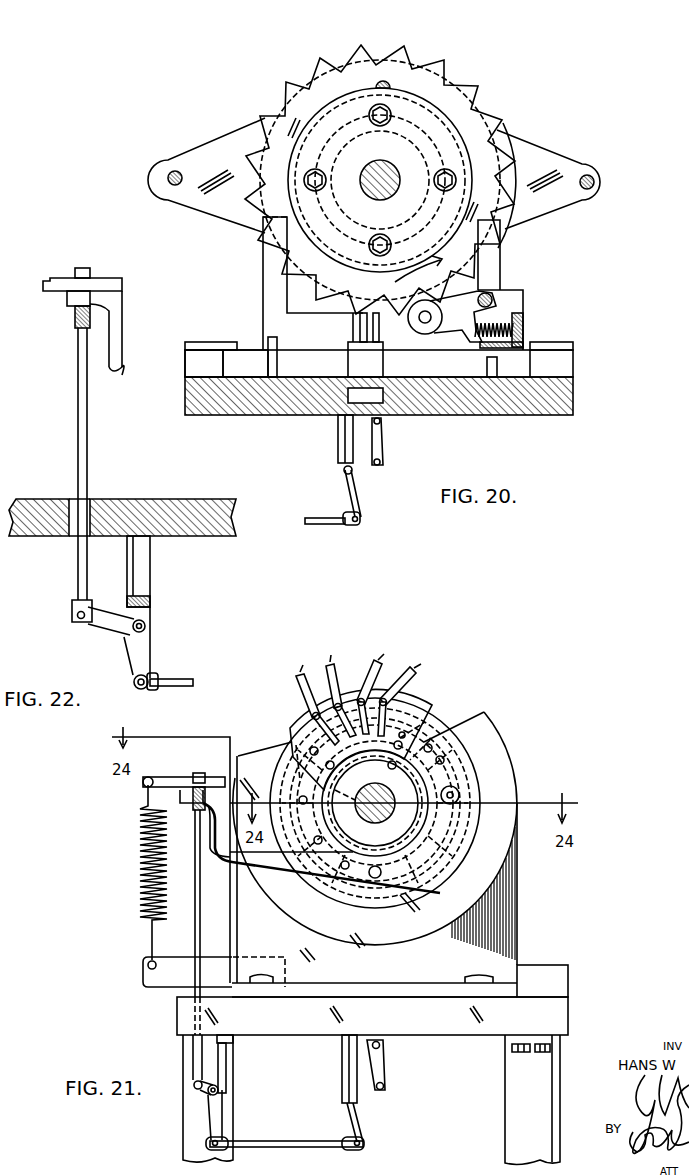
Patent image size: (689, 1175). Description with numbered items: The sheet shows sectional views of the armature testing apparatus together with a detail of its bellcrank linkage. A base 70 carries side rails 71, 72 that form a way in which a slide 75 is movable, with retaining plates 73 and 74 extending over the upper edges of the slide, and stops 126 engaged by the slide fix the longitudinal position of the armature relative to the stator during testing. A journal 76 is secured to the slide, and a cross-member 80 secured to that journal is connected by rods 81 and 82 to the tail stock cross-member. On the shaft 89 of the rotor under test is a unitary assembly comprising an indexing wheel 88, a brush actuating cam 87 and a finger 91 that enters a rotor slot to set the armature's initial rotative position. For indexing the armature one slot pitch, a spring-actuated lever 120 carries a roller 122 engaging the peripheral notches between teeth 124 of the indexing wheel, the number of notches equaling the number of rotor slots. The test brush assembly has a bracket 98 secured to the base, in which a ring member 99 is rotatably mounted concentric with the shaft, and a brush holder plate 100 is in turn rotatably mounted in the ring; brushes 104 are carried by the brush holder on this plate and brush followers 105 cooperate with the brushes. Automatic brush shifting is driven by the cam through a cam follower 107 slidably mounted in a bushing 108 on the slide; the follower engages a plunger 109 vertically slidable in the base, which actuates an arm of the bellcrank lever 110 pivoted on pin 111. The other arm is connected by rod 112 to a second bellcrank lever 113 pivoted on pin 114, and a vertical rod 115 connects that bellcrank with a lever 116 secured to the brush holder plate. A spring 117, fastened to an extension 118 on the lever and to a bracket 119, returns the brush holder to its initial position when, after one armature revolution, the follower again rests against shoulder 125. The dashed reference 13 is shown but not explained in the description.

In FIG. 21, the pin 13 is at (460, 793).
In FIG. 20, the base 70 is at (565, 405).
In FIG. 22, the base 70 is at (202, 499).
In FIG. 21, the base 70 is at (560, 1010).
In FIG. 20, the side rail 71 is at (565, 367).
In FIG. 21, the side rail 71 is at (562, 983).
In FIG. 20, the side rail 72 is at (193, 367).
In FIG. 20, the retaining plate 73 is at (563, 347).
In FIG. 21, the retaining plate 73 is at (552, 963).
In FIG. 20, the retaining plate 74 is at (200, 342).
In FIG. 20, the slide 75 is at (243, 360).
In FIG. 20, the journal 76 is at (273, 257).
In FIG. 20, the cross-member 80 is at (225, 147).
In FIG. 20, the rod 81 is at (596, 180).
In FIG. 20, the rod 82 is at (177, 168).
In FIG. 20, the brush actuating cam 87 is at (490, 262).
In FIG. 20, the indexing wheel 88 is at (427, 67).
In FIG. 20, the shaft 89 is at (397, 180).
In FIG. 21, the shaft 89 is at (393, 793).
In FIG. 20, the finger 91 is at (382, 82).
In FIG. 21, the bracket 98 is at (503, 887).
In FIG. 21, the ring member 99 is at (308, 765).
In FIG. 21, the brush holder plate 100 is at (392, 725).
In FIG. 21, the brushes 104 is at (390, 723).
In FIG. 21, the brush followers 105 is at (331, 665).
In FIG. 20, the cam follower 107 is at (360, 320).
In FIG. 20, the bushing 108 is at (348, 360).
In FIG. 20, the plunger 109 is at (381, 421).
In FIG. 21, the plunger 109 is at (387, 1040).
In FIG. 20, the bellcrank lever 110 is at (367, 477).
In FIG. 21, the bellcrank lever 110 is at (363, 1120).
In FIG. 20, the pin 111 is at (340, 443).
In FIG. 21, the pin 111 is at (347, 1068).
In FIG. 20, the rod 112 is at (323, 524).
In FIG. 22, the rod 112 is at (178, 679).
In FIG. 21, the rod 112 is at (283, 1141).
In FIG. 22, the second bellcrank lever 113 is at (131, 664).
In FIG. 21, the second bellcrank lever 113 is at (215, 1103).
In FIG. 22, the pin 114 is at (142, 579).
In FIG. 21, the pin 114 is at (222, 1063).
In FIG. 22, the vertical rod 115 is at (79, 435).
In FIG. 21, the vertical rod 115 is at (200, 945).
In FIG. 22, the lever 116 is at (124, 371).
In FIG. 21, the lever 116 is at (260, 860).
In FIG. 21, the spring 117 is at (143, 857).
In FIG. 22, the extension 118 is at (47, 278).
In FIG. 21, the extension 118 is at (157, 780).
In FIG. 21, the bracket 119 is at (162, 977).
In FIG. 20, the spring-actuated lever 120 is at (513, 303).
In FIG. 20, the roller 122 is at (425, 334).
In FIG. 20, the teeth 124 is at (453, 85).
In FIG. 20, the shoulder 125 is at (377, 337).
In FIG. 20, the stops 126 is at (268, 337).